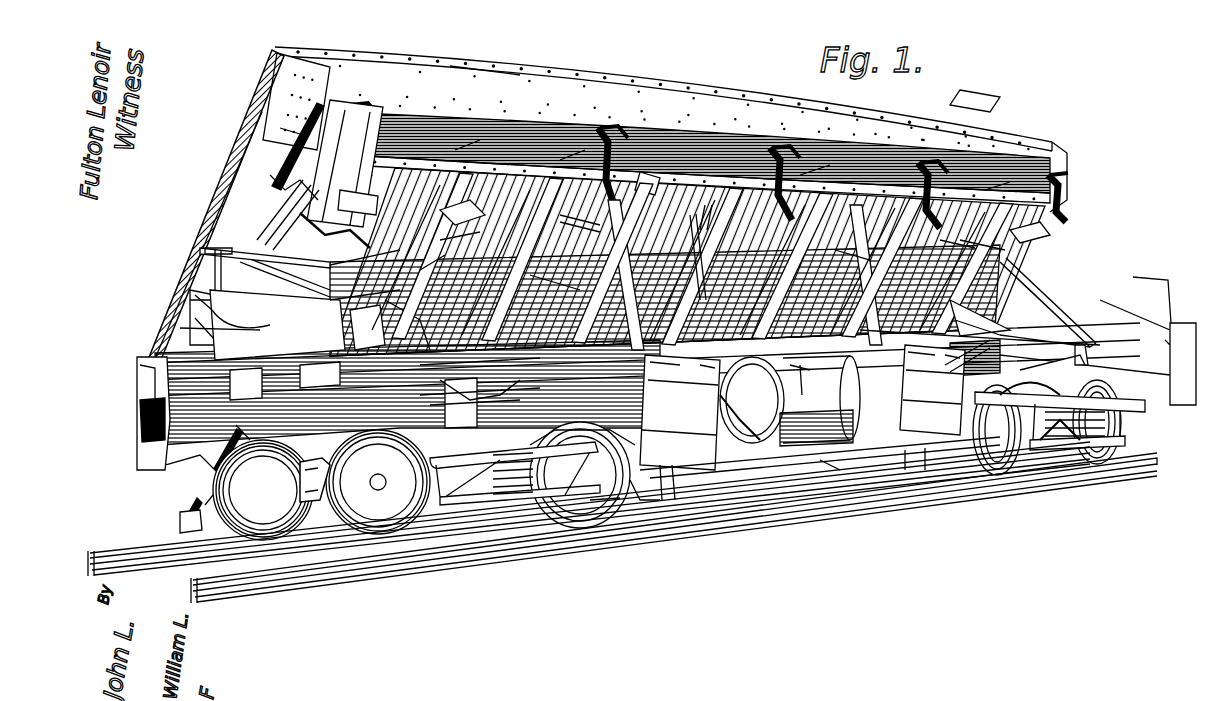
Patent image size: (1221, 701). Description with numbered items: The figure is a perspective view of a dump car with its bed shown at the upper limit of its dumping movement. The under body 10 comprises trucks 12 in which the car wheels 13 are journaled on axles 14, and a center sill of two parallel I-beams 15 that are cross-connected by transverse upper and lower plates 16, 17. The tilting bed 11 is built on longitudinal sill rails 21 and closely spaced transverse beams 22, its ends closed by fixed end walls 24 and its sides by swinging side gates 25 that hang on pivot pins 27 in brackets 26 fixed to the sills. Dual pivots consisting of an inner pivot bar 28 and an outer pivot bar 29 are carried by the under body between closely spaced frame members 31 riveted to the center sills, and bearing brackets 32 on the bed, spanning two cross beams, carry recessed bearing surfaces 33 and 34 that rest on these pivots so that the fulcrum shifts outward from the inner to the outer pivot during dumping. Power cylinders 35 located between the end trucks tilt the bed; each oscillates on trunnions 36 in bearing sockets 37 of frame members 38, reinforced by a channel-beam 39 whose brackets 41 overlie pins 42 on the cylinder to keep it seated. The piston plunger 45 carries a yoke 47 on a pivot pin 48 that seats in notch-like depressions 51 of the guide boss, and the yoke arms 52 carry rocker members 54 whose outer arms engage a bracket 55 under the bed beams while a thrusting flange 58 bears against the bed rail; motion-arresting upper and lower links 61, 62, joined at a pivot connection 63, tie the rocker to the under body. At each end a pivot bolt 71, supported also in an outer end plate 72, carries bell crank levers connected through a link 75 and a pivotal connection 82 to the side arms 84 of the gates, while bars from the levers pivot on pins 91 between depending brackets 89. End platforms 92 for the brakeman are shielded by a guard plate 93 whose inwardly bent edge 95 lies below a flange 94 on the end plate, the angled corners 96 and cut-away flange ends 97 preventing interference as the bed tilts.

The under body 10 is at (235, 488).
The tilting bed 11 is at (672, 70).
The trucks 12 is at (480, 515).
The car wheels 13 is at (270, 540).
The axles 14 is at (312, 500).
The I-beams 15 is at (600, 528).
The upper plate 16 is at (1060, 274).
The lower plate 17 is at (1030, 335).
The sill rails 21 is at (334, 150).
The transverse beams 22 is at (1062, 218).
The end walls 24 is at (275, 110).
The side gates 25 is at (486, 72).
The brackets 26 is at (438, 135).
The pivot pins 27 is at (358, 105).
The inner pivot bar 28 is at (692, 259).
The outer pivot bar 29 is at (480, 376).
The frame members 31 is at (491, 389).
The bearing brackets 32 is at (1108, 214).
The inner bearing recess 33 is at (1042, 264).
The outer bearing recess 34 is at (1118, 240).
The power cylinders 35 is at (800, 470).
The trunnions 36 is at (802, 407).
The bearing sockets 37 is at (801, 416).
The frame members 38 is at (635, 505).
The channel-beam 39 is at (598, 505).
The brackets 41 is at (675, 502).
The pins 42 is at (661, 502).
The piston plunger 45 is at (792, 367).
The yoke 47 is at (692, 215).
The pivot pin 48 is at (705, 205).
The notch-like depressions 51 is at (820, 364).
The yoke arms 52 is at (962, 236).
The rocker member 54 is at (655, 346).
The bracket 55 is at (565, 218).
The thrusting flange 58 is at (560, 280).
The upper link 61 is at (765, 403).
The lower link 62 is at (790, 401).
The pivot connection 63 is at (813, 375).
The pivot bolt 71 is at (212, 266).
The end plate 72 is at (240, 210).
The link 75 is at (277, 227).
The pivotal connection 82 is at (288, 143).
The side arms 84 is at (285, 129).
The depending brackets 89 is at (355, 327).
The pivot pin 91 is at (318, 440).
The end platforms 92 is at (180, 360).
The guard plate 93 is at (245, 322).
The flange 94 is at (298, 213).
The inwardly bent edge 95 is at (318, 300).
The angled corners 96 is at (282, 325).
The cut-away flange ends 97 is at (275, 178).